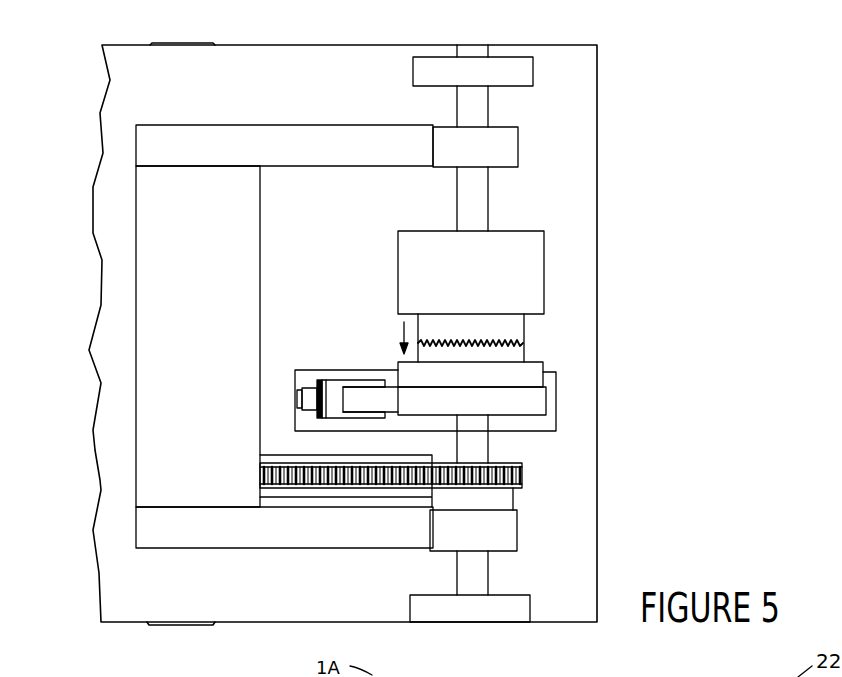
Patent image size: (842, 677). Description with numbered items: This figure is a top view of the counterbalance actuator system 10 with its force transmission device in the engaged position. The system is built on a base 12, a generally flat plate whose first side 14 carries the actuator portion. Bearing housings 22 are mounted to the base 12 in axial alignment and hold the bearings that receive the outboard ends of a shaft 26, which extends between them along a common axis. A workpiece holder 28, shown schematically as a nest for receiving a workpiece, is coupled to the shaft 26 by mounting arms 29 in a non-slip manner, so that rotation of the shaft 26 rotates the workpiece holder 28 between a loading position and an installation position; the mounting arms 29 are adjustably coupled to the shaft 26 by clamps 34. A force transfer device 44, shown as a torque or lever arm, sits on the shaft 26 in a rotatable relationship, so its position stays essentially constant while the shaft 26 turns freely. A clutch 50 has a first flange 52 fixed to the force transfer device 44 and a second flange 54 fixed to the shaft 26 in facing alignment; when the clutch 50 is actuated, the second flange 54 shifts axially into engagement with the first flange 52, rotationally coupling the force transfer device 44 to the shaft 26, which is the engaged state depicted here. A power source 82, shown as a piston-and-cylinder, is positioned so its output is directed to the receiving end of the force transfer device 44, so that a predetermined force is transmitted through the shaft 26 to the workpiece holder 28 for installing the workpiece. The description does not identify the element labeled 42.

The counterbalance actuator system 10 is at (700, 76).
The base 12 is at (117, 582).
The first side 14 is at (186, 601).
The bearing housing 22 is at (513, 70).
The shaft 26 is at (477, 203).
The workpiece holder 28 is at (158, 450).
The mounting arm 29 is at (255, 140).
The clamp 34 is at (503, 145).
The gear rack 42 is at (328, 478).
The force transfer device 44 is at (527, 402).
The clutch 50 is at (580, 283).
The first flange 52 is at (515, 353).
The second flange 54 is at (508, 335).
The power source 82 is at (312, 398).